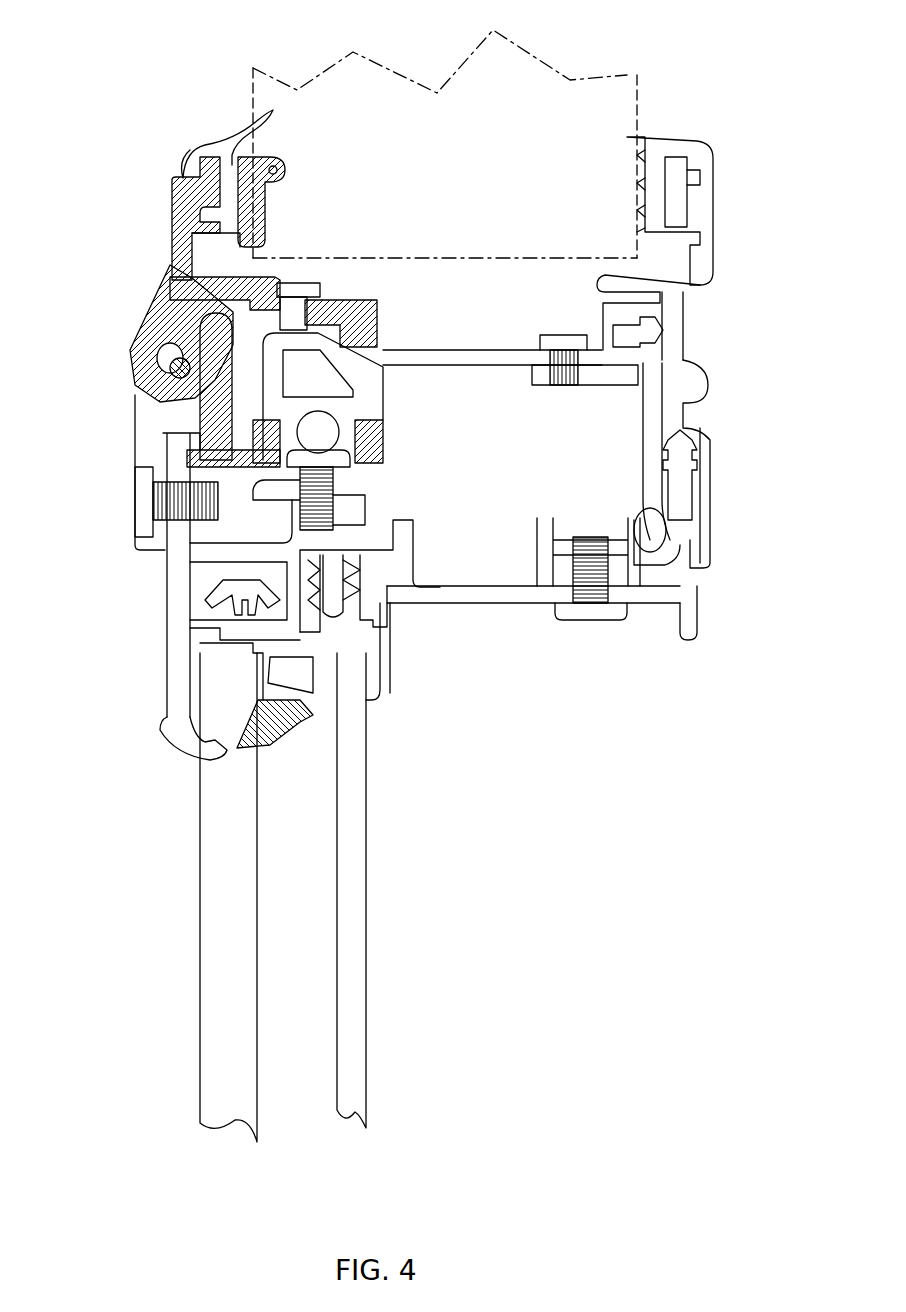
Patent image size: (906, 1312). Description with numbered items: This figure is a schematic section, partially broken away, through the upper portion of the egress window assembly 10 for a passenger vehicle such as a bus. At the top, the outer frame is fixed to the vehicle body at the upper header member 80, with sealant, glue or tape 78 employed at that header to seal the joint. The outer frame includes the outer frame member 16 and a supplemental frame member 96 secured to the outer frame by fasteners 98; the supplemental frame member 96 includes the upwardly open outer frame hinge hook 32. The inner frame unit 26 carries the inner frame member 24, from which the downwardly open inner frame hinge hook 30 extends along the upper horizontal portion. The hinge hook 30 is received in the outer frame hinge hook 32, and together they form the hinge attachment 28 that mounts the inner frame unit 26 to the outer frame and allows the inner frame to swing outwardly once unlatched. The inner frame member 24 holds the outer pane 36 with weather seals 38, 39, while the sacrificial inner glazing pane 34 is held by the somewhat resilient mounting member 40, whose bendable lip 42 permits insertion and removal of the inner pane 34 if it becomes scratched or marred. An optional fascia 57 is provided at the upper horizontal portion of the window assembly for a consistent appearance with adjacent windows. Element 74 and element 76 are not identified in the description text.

The egress window assembly 10 is at (702, 720).
The outer frame member 16 is at (428, 367).
The inner frame member 24 is at (475, 584).
The inner frame unit 26 is at (167, 608).
The hinge attachment 28 is at (118, 311).
The inner frame hinge hook 30 is at (232, 345).
The outer frame hinge hook 32 is at (135, 375).
The inner glazing pane 34 is at (360, 940).
The outer pane 36 is at (205, 955).
The weather seal 38 is at (190, 740).
The weather seal 39 is at (300, 737).
The resilient mounting member 40 is at (378, 555).
The bendable lip 42 is at (390, 668).
The fascia 57 is at (712, 280).
The top frame extrusion 74 is at (688, 137).
The fin gasket 76 is at (232, 140).
The sealant, glue or tape 78 is at (288, 170).
The upper header member 80 is at (530, 60).
The supplemental frame member 96 is at (170, 205).
The fasteners 98 is at (320, 287).